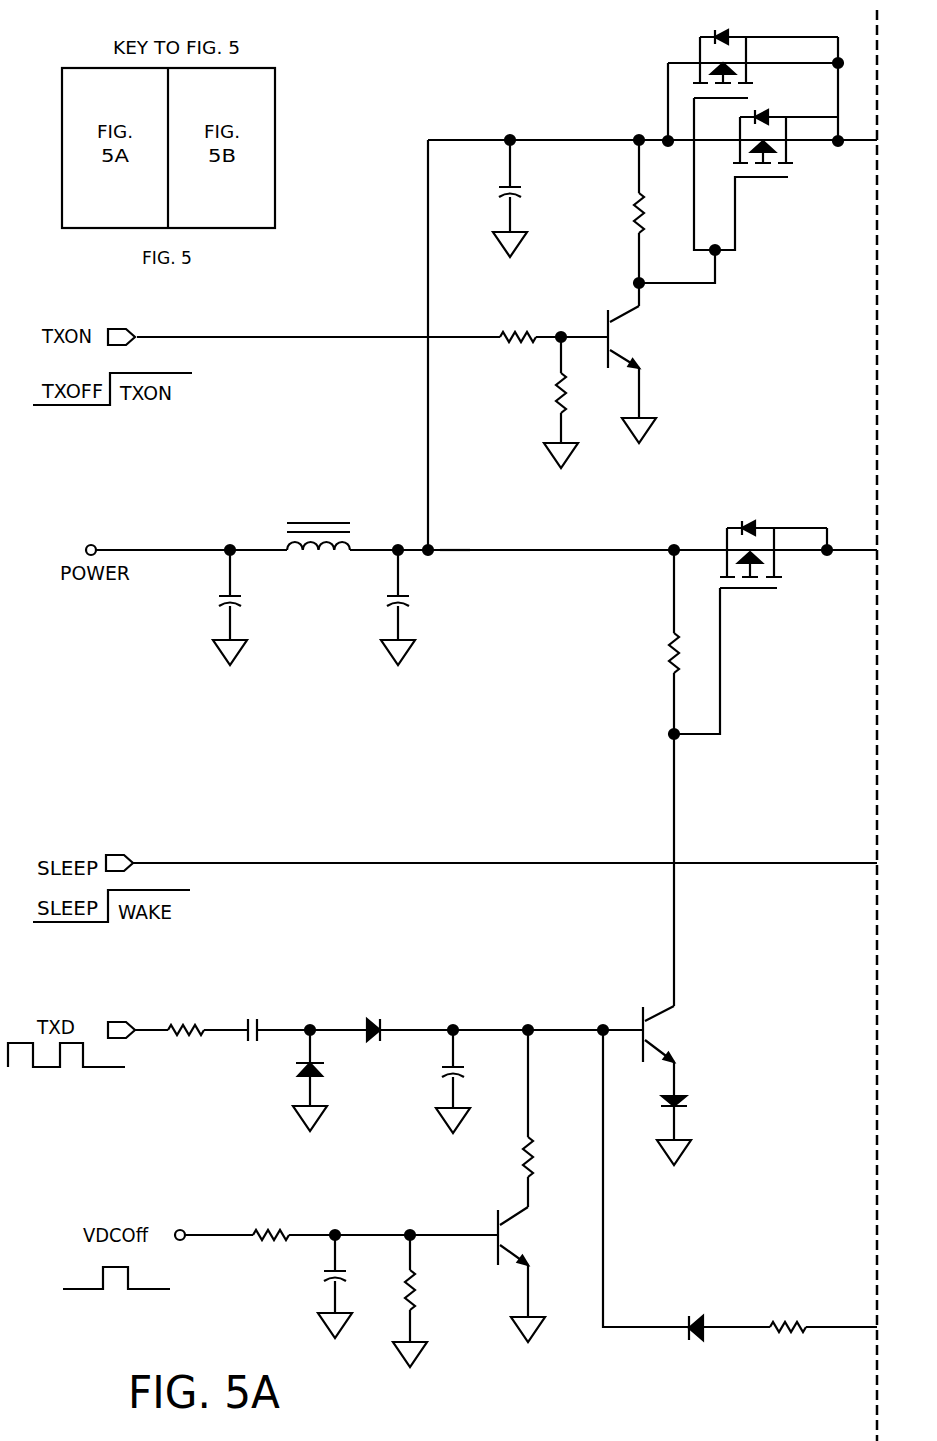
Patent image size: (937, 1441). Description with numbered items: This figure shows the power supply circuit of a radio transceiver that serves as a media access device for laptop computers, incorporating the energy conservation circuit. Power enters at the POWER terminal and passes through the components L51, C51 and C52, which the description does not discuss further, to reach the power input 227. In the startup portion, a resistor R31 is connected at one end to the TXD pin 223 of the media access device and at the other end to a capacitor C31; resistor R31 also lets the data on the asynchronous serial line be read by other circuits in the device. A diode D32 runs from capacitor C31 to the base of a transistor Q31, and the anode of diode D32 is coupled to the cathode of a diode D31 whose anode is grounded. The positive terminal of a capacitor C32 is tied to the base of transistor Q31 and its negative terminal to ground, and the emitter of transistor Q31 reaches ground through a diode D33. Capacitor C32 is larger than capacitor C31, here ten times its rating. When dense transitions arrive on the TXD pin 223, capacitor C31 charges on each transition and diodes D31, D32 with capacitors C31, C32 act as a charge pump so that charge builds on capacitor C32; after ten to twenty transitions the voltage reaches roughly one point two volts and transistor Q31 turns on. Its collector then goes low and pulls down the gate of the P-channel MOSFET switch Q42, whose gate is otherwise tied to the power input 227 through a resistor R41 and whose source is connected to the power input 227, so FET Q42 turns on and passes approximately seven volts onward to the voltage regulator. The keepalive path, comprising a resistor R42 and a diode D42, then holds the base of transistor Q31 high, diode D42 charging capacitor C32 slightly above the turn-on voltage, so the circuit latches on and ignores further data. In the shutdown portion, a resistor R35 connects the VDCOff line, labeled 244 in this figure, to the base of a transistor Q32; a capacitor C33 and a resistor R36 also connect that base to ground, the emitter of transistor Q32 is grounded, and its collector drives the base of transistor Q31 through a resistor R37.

The inductor L51 is at (333, 522).
The capacitor C51 is at (225, 608).
The capacitor C52 is at (404, 608).
The power supply input 227 is at (470, 550).
The field effect transistor switch Q42 is at (797, 527).
The resistor R41 is at (668, 650).
The TXD pin 223 is at (118, 1017).
The resistor R31 is at (182, 1020).
The capacitor C31 is at (264, 1025).
The diode D31 is at (300, 1069).
The diode D32 is at (386, 1021).
The capacitor C32 is at (450, 1078).
The resistor R37 is at (522, 1165).
The transistor Q31 is at (676, 1004).
The diode D33 is at (686, 1101).
The diode D42 is at (700, 1322).
The resistor R42 is at (795, 1318).
The VDCOff input 244 is at (181, 1229).
The resistor R35 is at (275, 1228).
The capacitor C33 is at (331, 1283).
The resistor R36 is at (418, 1292).
The transistor Q32 is at (530, 1205).